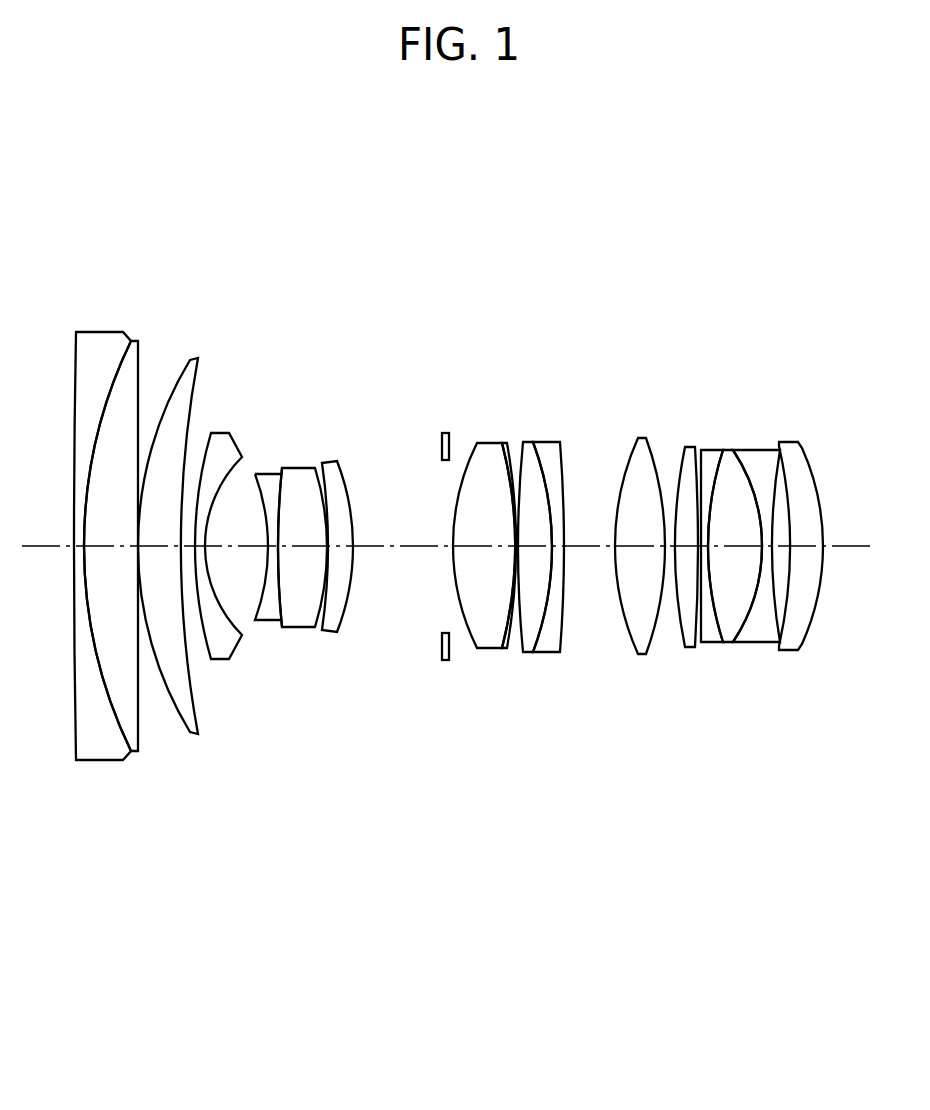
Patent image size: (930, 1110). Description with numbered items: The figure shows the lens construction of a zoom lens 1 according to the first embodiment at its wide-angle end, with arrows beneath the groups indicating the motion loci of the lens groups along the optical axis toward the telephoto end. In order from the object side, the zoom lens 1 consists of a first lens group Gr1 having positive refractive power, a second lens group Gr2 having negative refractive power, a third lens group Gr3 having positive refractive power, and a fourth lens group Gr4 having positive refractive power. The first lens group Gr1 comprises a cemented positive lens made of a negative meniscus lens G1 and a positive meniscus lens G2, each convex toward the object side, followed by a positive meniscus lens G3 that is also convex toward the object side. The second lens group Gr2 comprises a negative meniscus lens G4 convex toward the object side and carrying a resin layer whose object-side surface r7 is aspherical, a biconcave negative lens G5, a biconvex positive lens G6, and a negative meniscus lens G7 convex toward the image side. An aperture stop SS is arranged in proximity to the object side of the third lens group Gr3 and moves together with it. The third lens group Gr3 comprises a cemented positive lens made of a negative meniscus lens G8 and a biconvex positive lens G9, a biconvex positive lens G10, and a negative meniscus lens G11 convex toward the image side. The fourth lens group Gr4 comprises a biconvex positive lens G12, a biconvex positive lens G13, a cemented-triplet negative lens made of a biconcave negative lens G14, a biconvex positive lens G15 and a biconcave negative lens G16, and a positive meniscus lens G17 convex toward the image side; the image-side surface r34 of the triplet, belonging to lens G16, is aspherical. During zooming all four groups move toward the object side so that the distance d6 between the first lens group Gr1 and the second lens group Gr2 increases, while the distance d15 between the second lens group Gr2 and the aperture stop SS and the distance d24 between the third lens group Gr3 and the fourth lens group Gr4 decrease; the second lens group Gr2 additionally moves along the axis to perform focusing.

The zoom lens 1 is at (418, 247).
The first lens group Gr1 is at (43, 942).
The second lens group Gr2 is at (188, 780).
The third lens group Gr3 is at (458, 942).
The fourth lens group Gr4 is at (648, 943).
The negative meniscus lens G1 is at (95, 345).
The positive meniscus lens G2 is at (134, 340).
The positive meniscus lens G3 is at (197, 357).
The negative meniscus lens G4 is at (220, 440).
The biconcave negative lens G5 is at (270, 482).
The biconvex positive lens G6 is at (303, 482).
The negative meniscus lens G7 is at (335, 470).
The negative meniscus lens G8 is at (483, 452).
The biconvex positive lens G9 is at (505, 448).
The biconvex positive lens G10 is at (531, 450).
The negative meniscus lens G11 is at (553, 448).
The biconvex positive lens G12 is at (642, 440).
The biconvex positive lens G13 is at (690, 450).
The biconcave negative lens G14 is at (717, 452).
The biconvex positive lens G15 is at (735, 455).
The biconcave negative lens G16 is at (766, 456).
The positive meniscus lens G17 is at (793, 444).
The aperture stop SS is at (441, 445).
The distance between the first lens group and the second lens group d6 is at (189, 550).
The object-side surface of the resin layer r7 is at (198, 617).
The distance between the second lens group and the aperture stop d15 is at (383, 547).
The distance between the third lens group and the fourth lens group d24 is at (588, 547).
The image-side surface of the cemented-triplet negative lens r34 is at (772, 588).